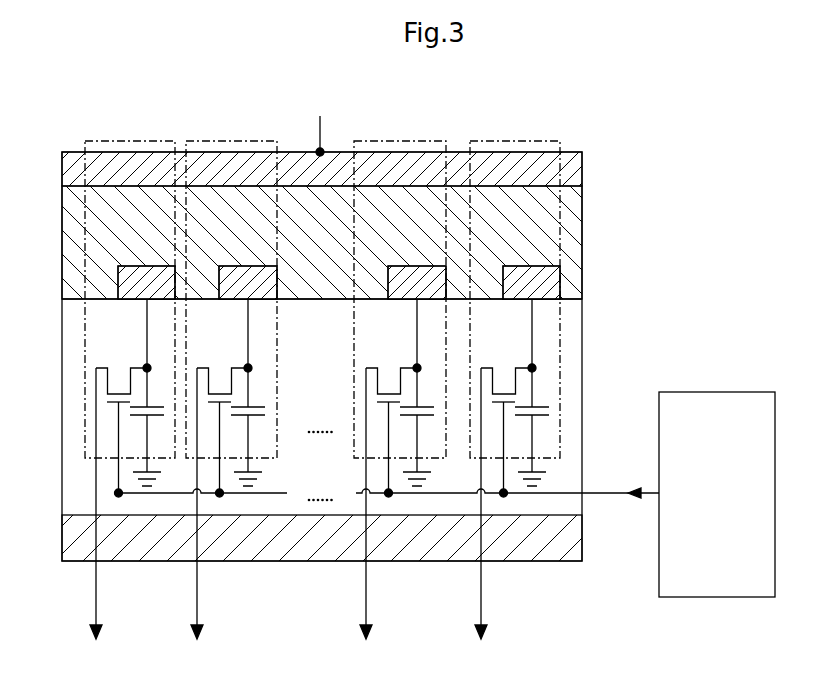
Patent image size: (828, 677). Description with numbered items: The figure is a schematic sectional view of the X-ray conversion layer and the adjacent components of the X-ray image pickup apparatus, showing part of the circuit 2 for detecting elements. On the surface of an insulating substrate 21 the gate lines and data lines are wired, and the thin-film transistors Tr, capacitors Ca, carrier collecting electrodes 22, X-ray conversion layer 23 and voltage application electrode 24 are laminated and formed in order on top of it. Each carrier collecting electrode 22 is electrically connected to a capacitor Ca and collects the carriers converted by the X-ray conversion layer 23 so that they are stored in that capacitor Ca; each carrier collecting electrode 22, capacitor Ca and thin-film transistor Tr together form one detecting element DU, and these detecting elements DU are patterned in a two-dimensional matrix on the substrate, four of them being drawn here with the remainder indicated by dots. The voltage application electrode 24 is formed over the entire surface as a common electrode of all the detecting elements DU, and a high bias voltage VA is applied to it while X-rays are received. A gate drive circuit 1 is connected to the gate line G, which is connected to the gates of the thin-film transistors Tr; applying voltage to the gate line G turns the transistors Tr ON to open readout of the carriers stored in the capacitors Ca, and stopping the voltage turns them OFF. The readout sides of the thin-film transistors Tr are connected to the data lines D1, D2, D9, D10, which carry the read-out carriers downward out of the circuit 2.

The gate drive circuit 1 is at (676, 391).
The circuit for detecting elements 2 is at (55, 497).
The insulating substrate 21 is at (568, 543).
The carrier collecting electrode 22 is at (548, 283).
The X-ray conversion layer 23 is at (567, 225).
The voltage application electrode 24 is at (567, 169).
The detecting element DU is at (243, 136).
The bias voltage VA is at (323, 125).
The thin-film transistor Tr is at (122, 371).
The capacitor Ca is at (265, 407).
The gate line G is at (612, 491).
The data line D1 is at (96, 612).
The data line D2 is at (197, 612).
The data line D9 is at (366, 612).
The data line D10 is at (481, 612).